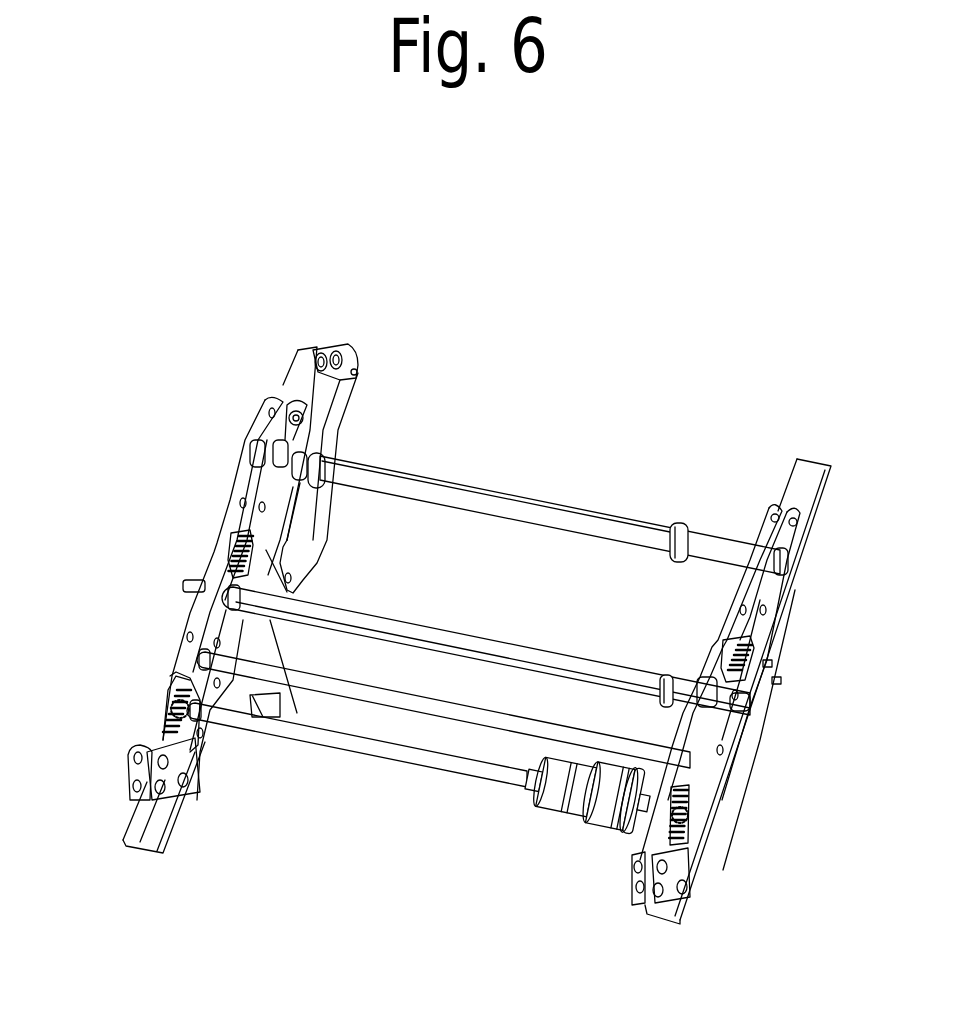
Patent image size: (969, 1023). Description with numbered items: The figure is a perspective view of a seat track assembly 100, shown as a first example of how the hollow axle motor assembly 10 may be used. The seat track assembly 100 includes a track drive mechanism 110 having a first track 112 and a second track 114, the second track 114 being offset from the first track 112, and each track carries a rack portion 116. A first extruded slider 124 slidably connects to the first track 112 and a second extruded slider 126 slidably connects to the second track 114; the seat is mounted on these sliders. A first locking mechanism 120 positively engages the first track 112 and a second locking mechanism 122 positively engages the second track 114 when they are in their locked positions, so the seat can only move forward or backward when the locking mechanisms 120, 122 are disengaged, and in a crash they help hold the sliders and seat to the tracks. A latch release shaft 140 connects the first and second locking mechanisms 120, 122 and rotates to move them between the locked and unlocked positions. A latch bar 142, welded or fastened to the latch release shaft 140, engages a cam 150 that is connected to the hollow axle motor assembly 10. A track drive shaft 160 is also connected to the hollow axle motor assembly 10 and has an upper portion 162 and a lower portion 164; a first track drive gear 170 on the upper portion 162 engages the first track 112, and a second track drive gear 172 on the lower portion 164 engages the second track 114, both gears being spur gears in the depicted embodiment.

The hollow axle motor assembly 10 is at (573, 817).
The seat track assembly 100 is at (609, 404).
The track drive mechanism 110 is at (464, 836).
The first track 112 is at (115, 817).
The second track 114 is at (806, 458).
The rack portion 116 is at (207, 545).
The first locking mechanism 120 is at (212, 560).
The second locking mechanism 122 is at (775, 687).
The first extruded slider 124 is at (130, 757).
The second extruded slider 126 is at (633, 900).
The latch release shaft 140 is at (347, 607).
The latch bar 142 is at (670, 673).
The cam 150 is at (630, 830).
The track drive shaft 160 is at (387, 758).
The upper portion 162 is at (162, 710).
The lower portion 164 is at (700, 822).
The first track drive gear 170 is at (167, 697).
The second track drive gear 172 is at (690, 795).